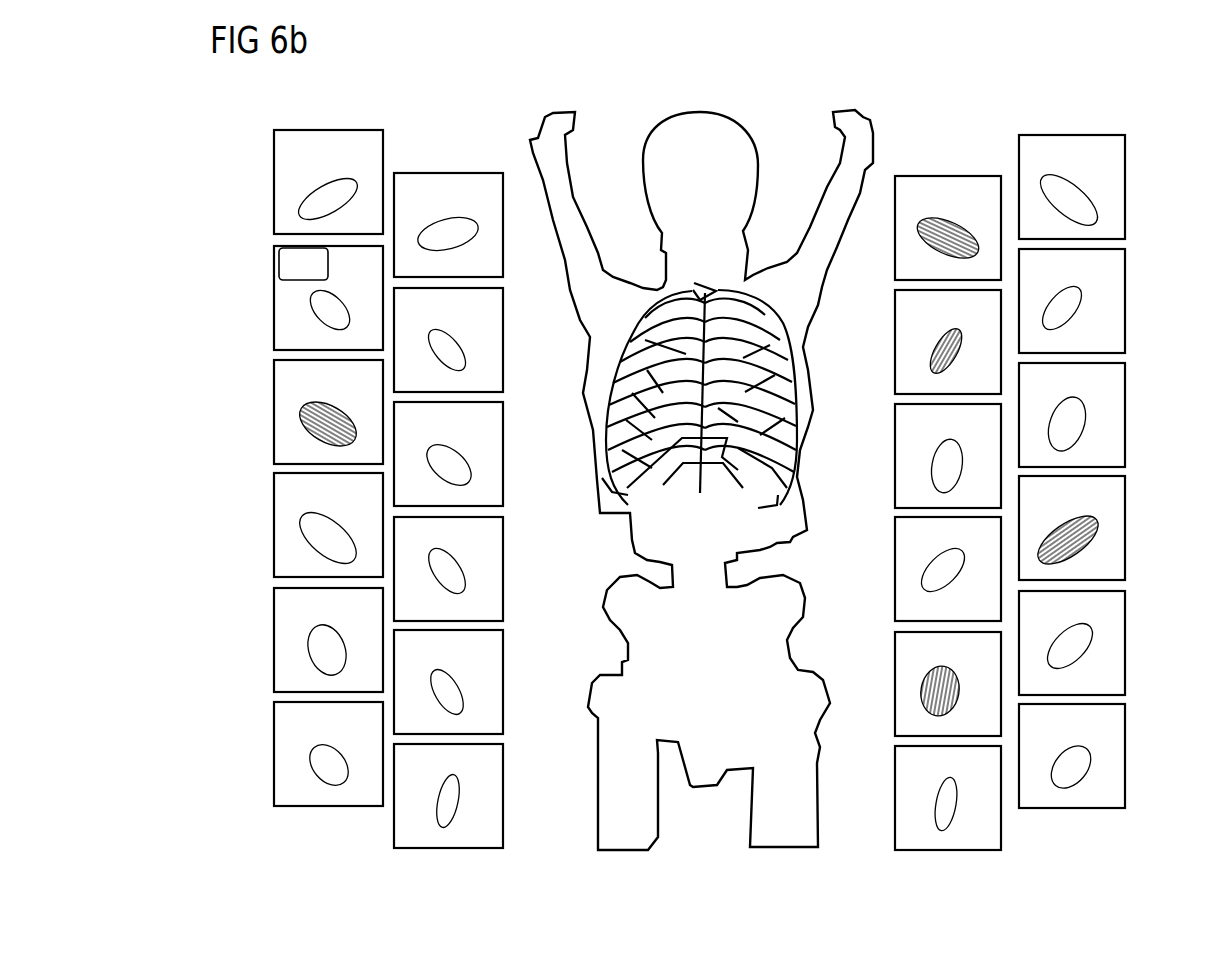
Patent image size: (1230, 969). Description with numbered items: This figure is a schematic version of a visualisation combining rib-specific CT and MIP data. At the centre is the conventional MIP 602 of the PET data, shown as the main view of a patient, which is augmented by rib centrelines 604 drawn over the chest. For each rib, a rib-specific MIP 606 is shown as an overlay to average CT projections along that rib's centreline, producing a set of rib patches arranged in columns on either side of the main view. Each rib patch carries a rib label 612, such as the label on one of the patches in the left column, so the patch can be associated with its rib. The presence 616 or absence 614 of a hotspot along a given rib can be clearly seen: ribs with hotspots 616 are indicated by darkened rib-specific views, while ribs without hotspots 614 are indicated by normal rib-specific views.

The conventional MIP 602 is at (695, 104).
The rib centrelines 604 is at (752, 292).
The rib-specific MIP 606 is at (701, 481).
The rib labels 612 is at (279, 262).
The absence of a hotspot 614 is at (1088, 418).
The presence of a hotspot 616 is at (1097, 525).